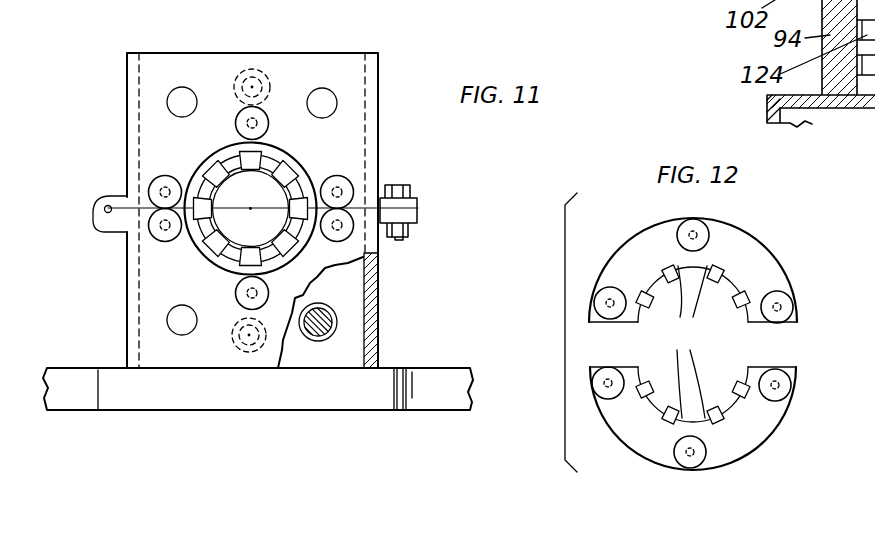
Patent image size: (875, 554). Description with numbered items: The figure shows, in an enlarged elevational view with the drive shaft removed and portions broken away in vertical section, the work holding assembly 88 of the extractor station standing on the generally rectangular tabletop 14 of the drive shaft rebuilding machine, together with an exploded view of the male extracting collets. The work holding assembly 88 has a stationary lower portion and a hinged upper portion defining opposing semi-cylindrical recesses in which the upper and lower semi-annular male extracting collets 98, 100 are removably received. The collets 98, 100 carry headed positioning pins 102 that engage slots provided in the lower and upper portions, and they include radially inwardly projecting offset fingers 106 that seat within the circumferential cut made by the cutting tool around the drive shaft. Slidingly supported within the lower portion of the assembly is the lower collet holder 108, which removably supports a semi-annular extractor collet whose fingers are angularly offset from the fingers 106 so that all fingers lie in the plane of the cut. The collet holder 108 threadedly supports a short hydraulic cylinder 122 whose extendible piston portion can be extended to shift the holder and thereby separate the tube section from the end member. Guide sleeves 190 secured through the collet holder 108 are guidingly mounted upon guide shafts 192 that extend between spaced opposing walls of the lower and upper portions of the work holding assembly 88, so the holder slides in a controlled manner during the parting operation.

In FIG. 11, the tabletop 14 is at (433, 402).
In FIG. 11, the work holding assembly 88 is at (386, 92).
In FIG. 11, the upper semi-annular male extracting collet 98 is at (190, 238).
In FIG. 12, the upper semi-annular male extracting collet 98 is at (738, 440).
In FIG. 11, the lower semi-annular male extracting collet 100 is at (300, 167).
In FIG. 12, the lower semi-annular male extracting collet 100 is at (643, 250).
In FIG. 11, the headed positioning pins 102 is at (240, 118).
In FIG. 12, the headed positioning pins 102 is at (777, 380).
In FIG. 12, the offset fingers 106 is at (689, 342).
In FIG. 11, the lower collet holder 108 is at (352, 287).
In FIG. 11, the hydraulic cylinder 122 is at (243, 351).
In FIG. 11, the guide sleeves 190 is at (338, 325).
In FIG. 11, the guide shafts 192 is at (320, 330).